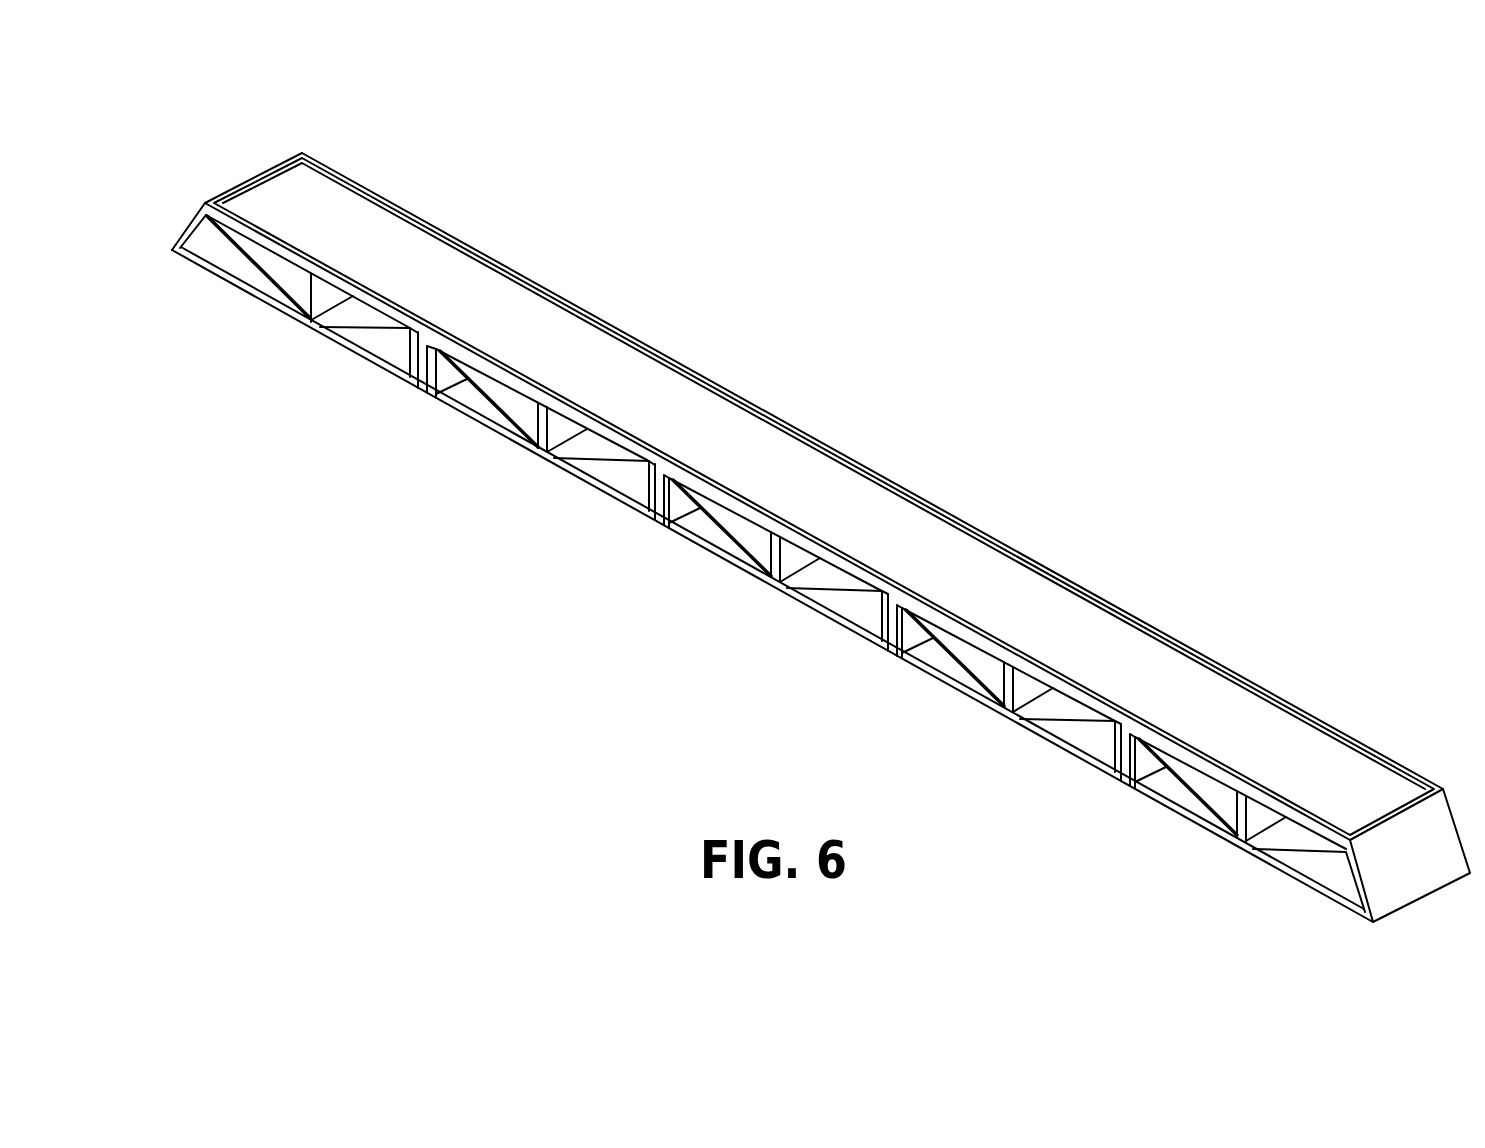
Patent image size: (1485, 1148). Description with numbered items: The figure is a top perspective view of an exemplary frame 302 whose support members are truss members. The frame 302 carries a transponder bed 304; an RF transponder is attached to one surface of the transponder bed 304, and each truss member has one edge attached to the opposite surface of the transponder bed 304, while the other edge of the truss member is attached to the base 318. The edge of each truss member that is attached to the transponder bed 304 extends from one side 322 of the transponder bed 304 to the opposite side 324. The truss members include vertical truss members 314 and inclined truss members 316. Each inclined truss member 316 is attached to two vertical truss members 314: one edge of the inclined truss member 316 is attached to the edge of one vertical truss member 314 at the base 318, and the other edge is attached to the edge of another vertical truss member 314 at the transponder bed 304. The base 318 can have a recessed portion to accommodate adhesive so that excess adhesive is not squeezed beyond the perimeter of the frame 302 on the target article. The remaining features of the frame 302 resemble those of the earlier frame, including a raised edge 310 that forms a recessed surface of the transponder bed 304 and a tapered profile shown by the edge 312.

The frame 302 is at (785, 500).
The transponder bed 304 is at (1178, 701).
The raised edge 310 is at (668, 354).
The edge 312 is at (191, 214).
The vertical truss members 314 is at (410, 384).
The inclined truss members 316 is at (360, 332).
The base 318 is at (664, 531).
The side 322 is at (297, 311).
The side 324 is at (497, 258).